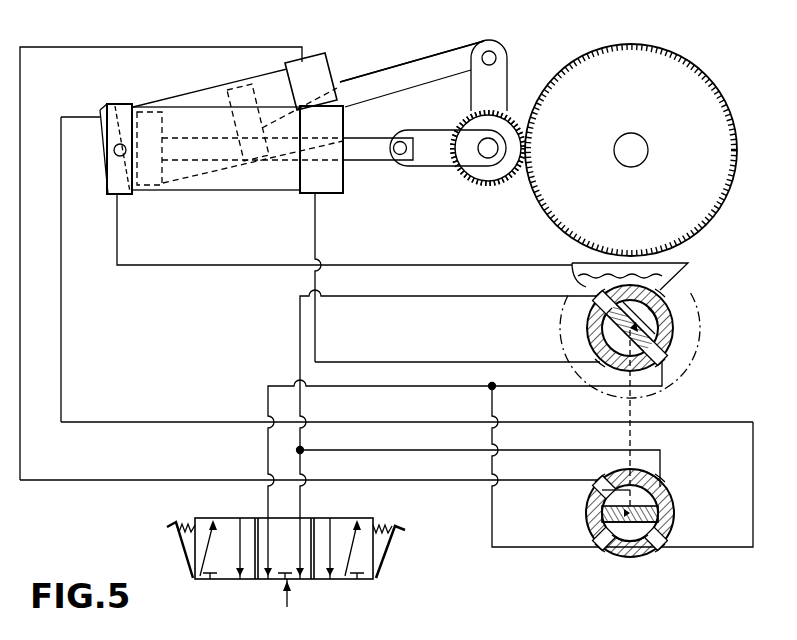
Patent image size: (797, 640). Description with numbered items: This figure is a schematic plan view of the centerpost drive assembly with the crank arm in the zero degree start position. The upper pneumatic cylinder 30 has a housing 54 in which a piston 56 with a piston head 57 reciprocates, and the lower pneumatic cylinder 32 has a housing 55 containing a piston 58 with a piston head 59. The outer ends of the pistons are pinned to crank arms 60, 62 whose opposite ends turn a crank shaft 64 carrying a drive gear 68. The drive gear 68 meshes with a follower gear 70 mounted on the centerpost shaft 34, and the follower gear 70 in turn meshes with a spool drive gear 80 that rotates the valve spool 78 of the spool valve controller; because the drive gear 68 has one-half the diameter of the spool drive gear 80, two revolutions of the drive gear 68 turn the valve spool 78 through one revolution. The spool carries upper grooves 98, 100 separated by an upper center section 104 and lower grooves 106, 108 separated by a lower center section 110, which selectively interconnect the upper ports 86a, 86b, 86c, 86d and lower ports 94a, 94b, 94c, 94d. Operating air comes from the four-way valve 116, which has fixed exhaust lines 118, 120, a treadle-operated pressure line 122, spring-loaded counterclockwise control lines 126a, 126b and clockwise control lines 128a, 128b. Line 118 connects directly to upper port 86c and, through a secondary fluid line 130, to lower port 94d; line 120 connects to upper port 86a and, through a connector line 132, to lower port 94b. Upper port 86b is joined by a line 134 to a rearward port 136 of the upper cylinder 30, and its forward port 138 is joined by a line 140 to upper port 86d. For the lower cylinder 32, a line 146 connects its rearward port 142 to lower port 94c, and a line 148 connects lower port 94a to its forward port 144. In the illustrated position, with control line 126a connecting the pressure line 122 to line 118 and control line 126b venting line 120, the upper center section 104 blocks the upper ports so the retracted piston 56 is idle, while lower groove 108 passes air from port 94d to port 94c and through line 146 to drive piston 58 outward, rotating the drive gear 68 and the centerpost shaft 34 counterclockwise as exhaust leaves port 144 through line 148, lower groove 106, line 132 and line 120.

The upper pneumatic cylinder 30 is at (412, 234).
The lower pneumatic cylinder 32 is at (342, 78).
The centerpost shaft 34 is at (637, 147).
The cylinder housing 54 is at (238, 192).
The cylinder housing 55 is at (198, 87).
The piston 56 is at (366, 162).
The piston head 57 is at (174, 186).
The piston 58 is at (425, 68).
The piston head 59 is at (238, 88).
The crank arm 60 is at (435, 168).
The crank arm 62 is at (502, 78).
The crank shaft 64 is at (488, 152).
The drive gear 68 is at (515, 182).
The follower gear 70 is at (713, 83).
The valve spool 78 is at (635, 540).
The spool drive gear 80 is at (668, 266).
The upper port 86a is at (598, 296).
The upper port 86b is at (670, 300).
The upper port 86c is at (665, 356).
The upper port 86d is at (598, 360).
The lower port 94a is at (600, 480).
The lower port 94b is at (664, 482).
The lower port 94c is at (666, 547).
The lower port 94d is at (603, 545).
The upper groove 98 is at (612, 327).
The upper groove 100 is at (656, 326).
The upper center section 104 is at (648, 316).
The lower groove 106 is at (616, 498).
The lower groove 108 is at (632, 560).
The lower center section 110 is at (660, 509).
The four-way valve 116 is at (258, 562).
The exhaust line 118 is at (266, 500).
The exhaust line 120 is at (302, 500).
The pressure line 122 is at (290, 600).
The counterclockwise control line 126a is at (215, 552).
The counterclockwise control line 126b is at (250, 577).
The clockwise control line 128a is at (332, 530).
The clockwise control line 128b is at (350, 554).
The secondary fluid line 130 is at (495, 551).
The connector line 132 is at (368, 451).
The fluid line 134 is at (188, 268).
The port 136 is at (108, 195).
The port 138 is at (318, 192).
The fluid line 140 is at (343, 360).
The rearward port 142 is at (95, 114).
The forward port 144 is at (307, 58).
The fluid line 146 is at (146, 420).
The fluid line 148 is at (119, 479).